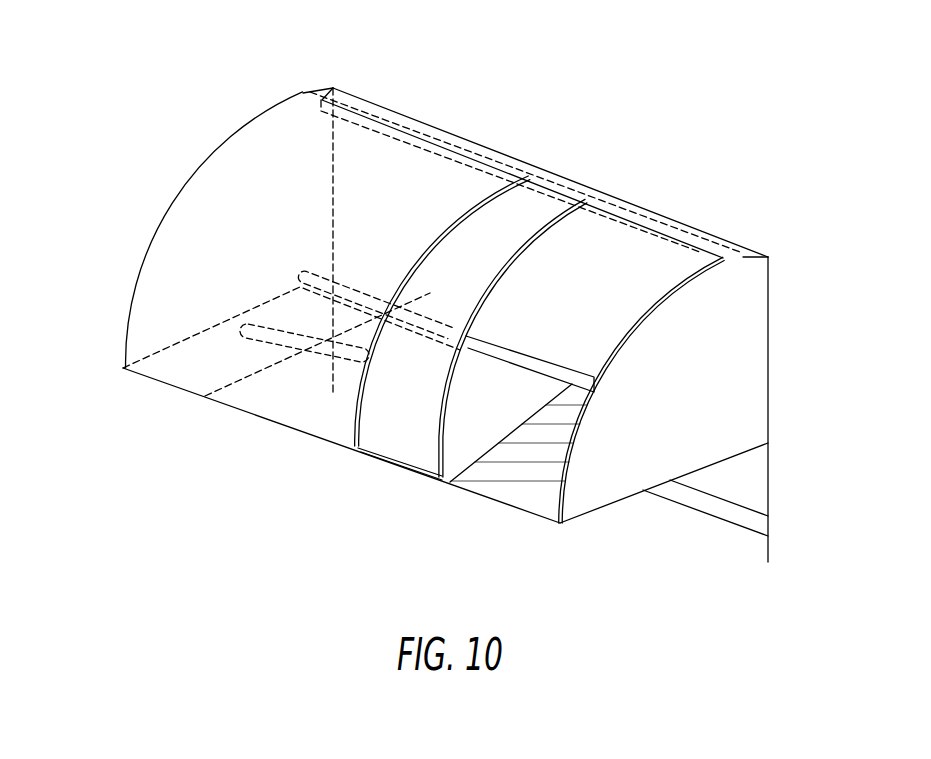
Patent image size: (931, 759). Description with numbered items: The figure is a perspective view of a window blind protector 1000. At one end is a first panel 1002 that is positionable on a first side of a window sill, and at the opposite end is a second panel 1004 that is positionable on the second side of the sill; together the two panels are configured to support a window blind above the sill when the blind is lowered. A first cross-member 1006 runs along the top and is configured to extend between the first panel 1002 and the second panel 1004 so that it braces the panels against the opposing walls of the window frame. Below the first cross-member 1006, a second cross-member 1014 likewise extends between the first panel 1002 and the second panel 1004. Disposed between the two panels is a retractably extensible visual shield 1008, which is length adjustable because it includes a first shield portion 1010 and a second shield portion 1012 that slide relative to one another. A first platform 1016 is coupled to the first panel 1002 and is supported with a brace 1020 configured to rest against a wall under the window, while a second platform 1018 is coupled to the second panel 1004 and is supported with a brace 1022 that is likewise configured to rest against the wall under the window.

The window blind protector 1000 is at (606, 110).
The first panel 1002 is at (227, 138).
The second panel 1004 is at (742, 275).
The first cross-member 1006 is at (435, 153).
The retractably extensible visual shield 1008 is at (312, 417).
The first shield portion 1010 is at (157, 305).
The second shield portion 1012 is at (383, 447).
The second cross-member 1014 is at (535, 365).
The first platform 1016 is at (192, 373).
The second platform 1018 is at (520, 487).
The brace 1020 is at (348, 357).
The brace 1022 is at (708, 498).